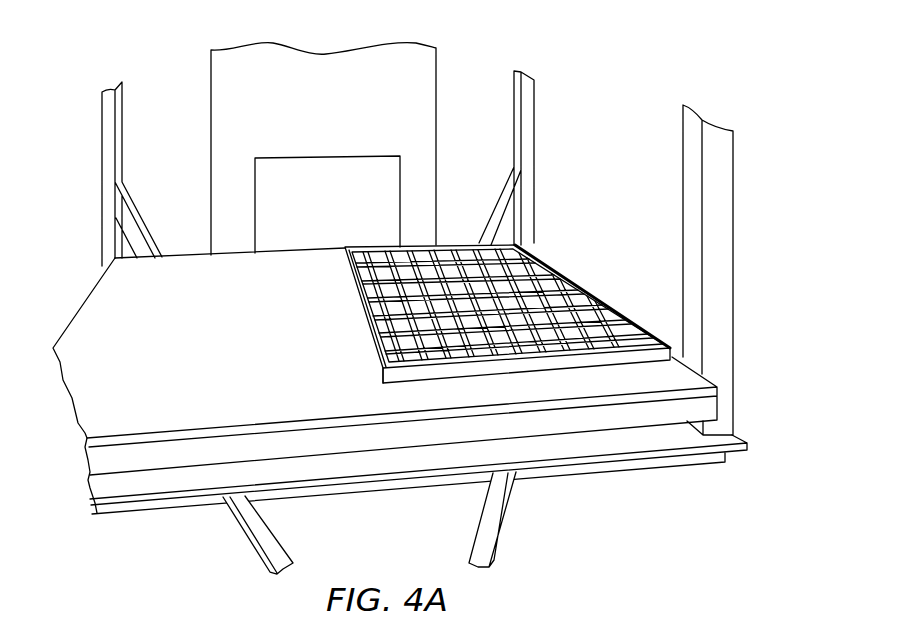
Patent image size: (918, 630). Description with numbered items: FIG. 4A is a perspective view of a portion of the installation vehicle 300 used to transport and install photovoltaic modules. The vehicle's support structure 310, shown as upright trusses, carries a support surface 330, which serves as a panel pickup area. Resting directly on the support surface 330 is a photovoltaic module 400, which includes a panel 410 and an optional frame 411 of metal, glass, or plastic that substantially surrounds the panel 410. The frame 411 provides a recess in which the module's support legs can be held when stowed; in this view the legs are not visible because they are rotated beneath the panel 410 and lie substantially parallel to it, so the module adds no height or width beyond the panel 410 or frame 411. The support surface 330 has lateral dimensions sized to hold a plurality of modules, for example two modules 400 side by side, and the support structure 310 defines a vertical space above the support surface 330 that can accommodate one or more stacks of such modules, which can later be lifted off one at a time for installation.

The installation vehicle 300 is at (645, 97).
The support structure 310 is at (719, 317).
The support surface 330 is at (586, 385).
The photovoltaic module 400 is at (399, 340).
The panel 410 is at (504, 305).
The frame 411 is at (356, 285).